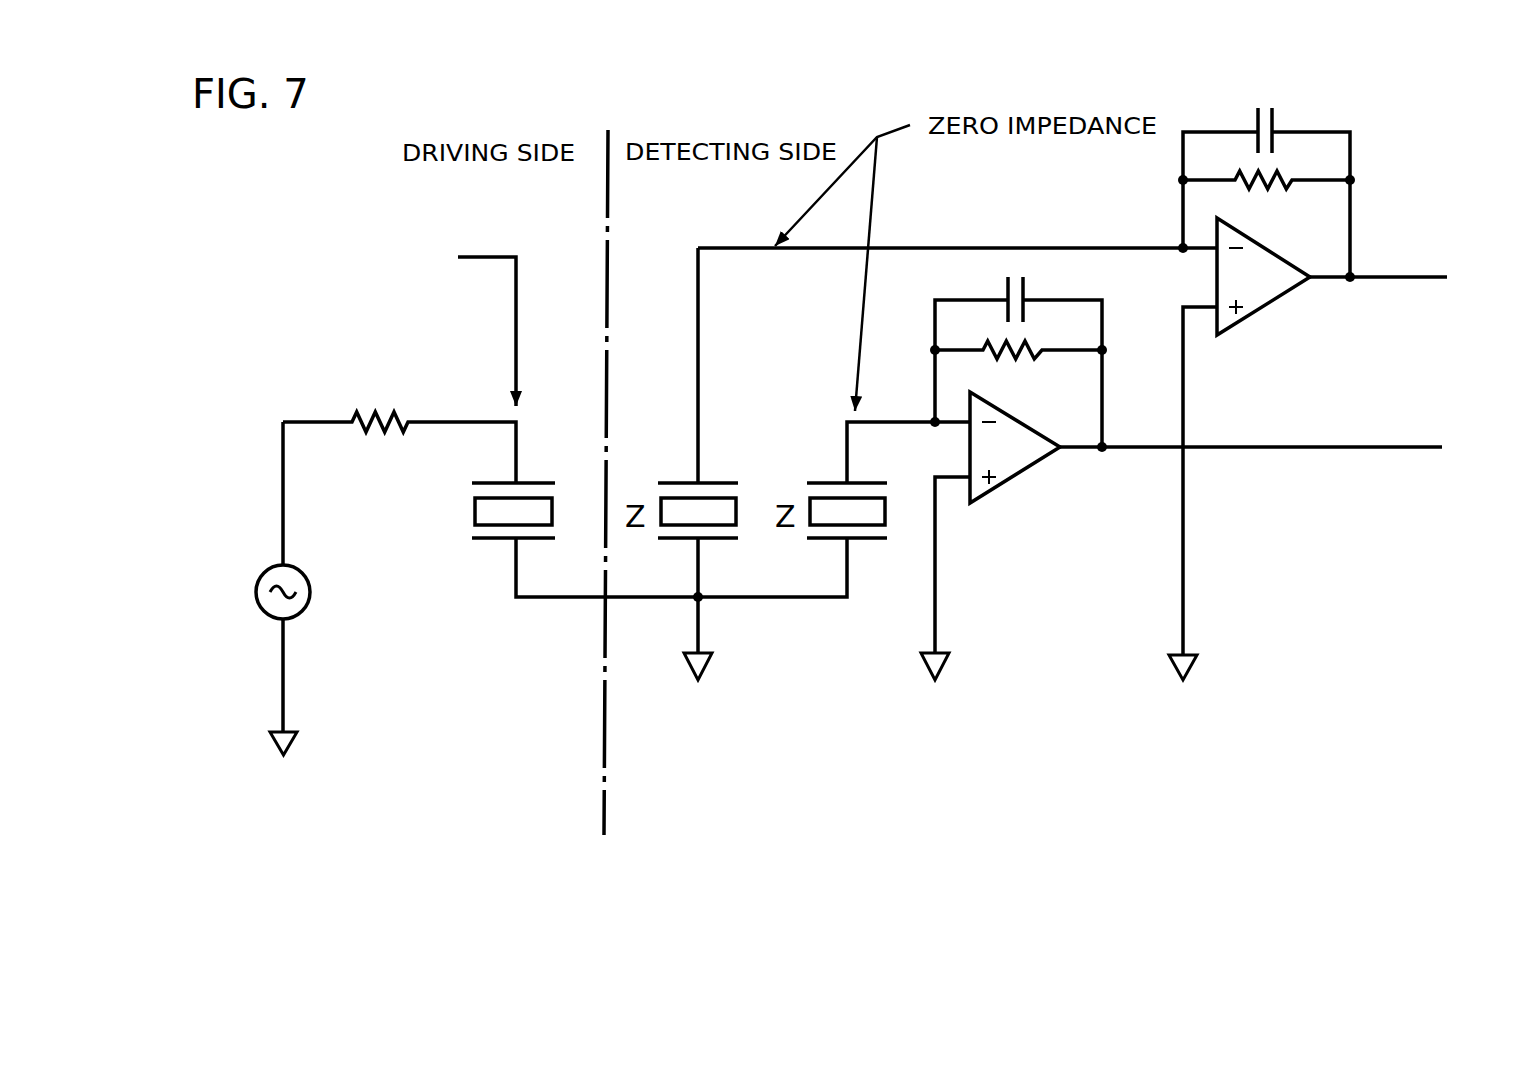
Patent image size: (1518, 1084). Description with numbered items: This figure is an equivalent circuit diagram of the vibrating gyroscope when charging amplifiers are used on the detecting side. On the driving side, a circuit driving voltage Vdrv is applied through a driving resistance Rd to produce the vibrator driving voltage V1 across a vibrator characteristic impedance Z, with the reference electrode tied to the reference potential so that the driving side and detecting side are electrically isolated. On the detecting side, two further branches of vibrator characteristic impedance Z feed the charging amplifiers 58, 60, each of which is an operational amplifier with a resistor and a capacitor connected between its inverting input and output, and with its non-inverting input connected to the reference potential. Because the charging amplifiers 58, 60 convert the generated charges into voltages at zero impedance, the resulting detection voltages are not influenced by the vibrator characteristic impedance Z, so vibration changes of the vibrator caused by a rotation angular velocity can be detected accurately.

The charging amplifier 58 is at (1168, 238).
The charging amplifier 60 is at (920, 407).
The vibrator driving voltage V1 is at (462, 325).
The driving resistance Rd is at (399, 425).
The circuit driving voltage Vdrv is at (239, 588).
The vibrator characteristic impedance Z is at (491, 510).